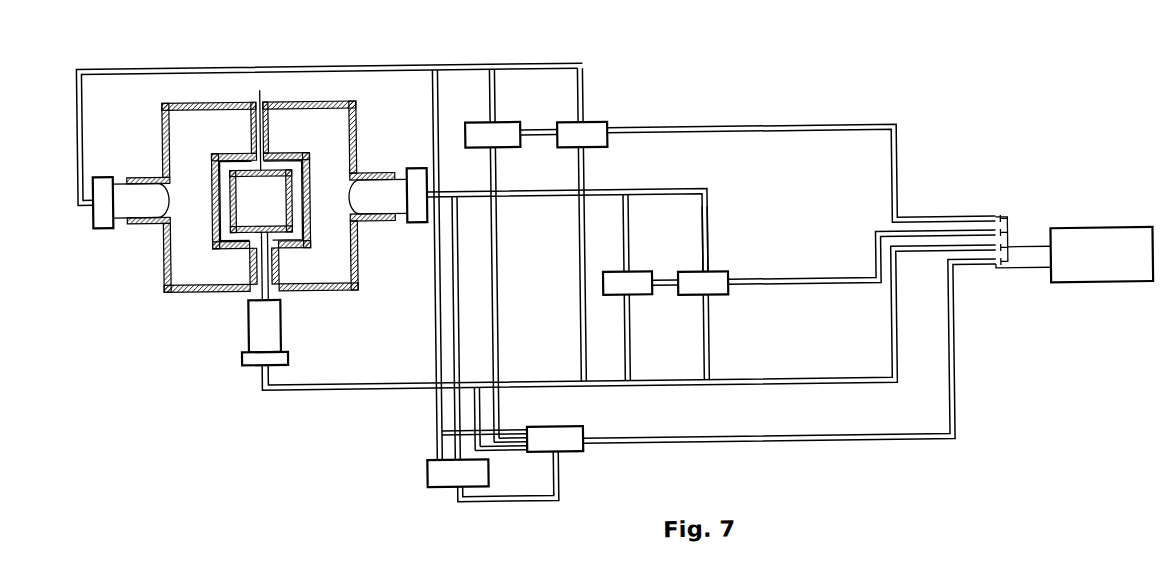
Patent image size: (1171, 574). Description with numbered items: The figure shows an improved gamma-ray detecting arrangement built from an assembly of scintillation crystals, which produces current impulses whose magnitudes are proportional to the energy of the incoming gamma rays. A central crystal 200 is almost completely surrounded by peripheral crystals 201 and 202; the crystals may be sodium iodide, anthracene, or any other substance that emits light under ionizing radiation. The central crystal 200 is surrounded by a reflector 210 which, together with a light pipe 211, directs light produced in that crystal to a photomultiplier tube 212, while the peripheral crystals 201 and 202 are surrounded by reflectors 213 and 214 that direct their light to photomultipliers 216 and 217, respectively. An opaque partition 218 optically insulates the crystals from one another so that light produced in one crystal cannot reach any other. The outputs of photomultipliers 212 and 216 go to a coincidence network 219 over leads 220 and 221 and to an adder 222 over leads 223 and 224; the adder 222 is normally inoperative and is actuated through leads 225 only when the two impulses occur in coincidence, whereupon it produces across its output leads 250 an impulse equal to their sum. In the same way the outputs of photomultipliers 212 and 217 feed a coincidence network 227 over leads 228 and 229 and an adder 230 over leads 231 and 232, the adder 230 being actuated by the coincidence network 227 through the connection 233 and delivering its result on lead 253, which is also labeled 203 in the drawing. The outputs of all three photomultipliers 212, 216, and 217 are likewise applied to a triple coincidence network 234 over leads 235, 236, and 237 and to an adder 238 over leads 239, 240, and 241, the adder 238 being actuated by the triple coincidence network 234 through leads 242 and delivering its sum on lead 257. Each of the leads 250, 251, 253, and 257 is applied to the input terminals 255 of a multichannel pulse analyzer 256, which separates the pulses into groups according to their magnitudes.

The central crystal 200 is at (279, 181).
The peripheral crystal 201 is at (358, 101).
The peripheral crystal 202 is at (182, 124).
The output lead 203 is at (839, 131).
The reflector 210 is at (294, 188).
The light pipe 211 is at (292, 288).
The photomultiplier tube 212 is at (271, 331).
The reflector 213 is at (358, 248).
The reflector 214 is at (166, 267).
The photomultiplier 216 is at (387, 201).
The photomultiplier 217 is at (135, 194).
The opaque partition 218 is at (239, 161).
The coincidence network 219 is at (640, 276).
The lead 220 is at (629, 338).
The lead 221 is at (629, 230).
The adder 222 is at (721, 274).
The lead 223 is at (706, 339).
The lead 224 is at (708, 220).
The leads 225 is at (660, 283).
The coincidence network 227 is at (511, 131).
The lead 228 is at (496, 272).
The lead 229 is at (491, 99).
The adder 230 is at (582, 135).
The lead 231 is at (579, 241).
The lead 232 is at (579, 95).
The lead 233 is at (533, 139).
The triple coincidence network 234 is at (424, 470).
The lead 235 is at (477, 403).
The lead 236 is at (436, 276).
The lead 237 is at (457, 314).
The adder 238 is at (570, 430).
The lead 239 is at (489, 434).
The lead 240 is at (508, 441).
The lead 241 is at (495, 452).
The leads 242 is at (554, 490).
The output leads 250 is at (794, 289).
The lead 251 is at (321, 389).
The lead 253 is at (636, 132).
The input terminals 255 is at (1015, 265).
The multichannel pulse analyzer 256 is at (1087, 283).
The lead 257 is at (779, 449).